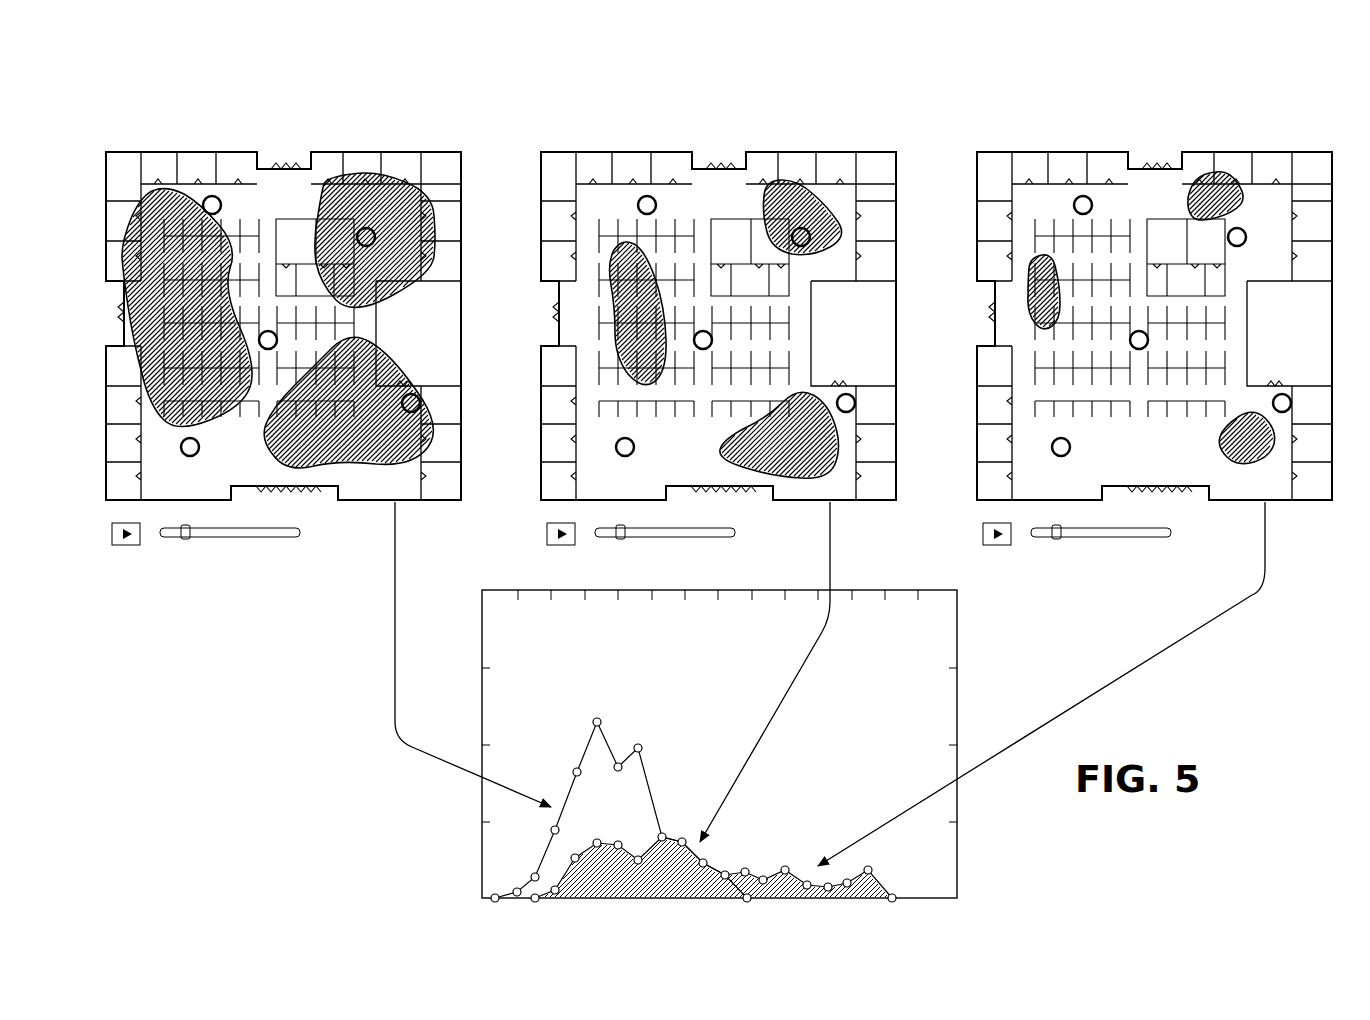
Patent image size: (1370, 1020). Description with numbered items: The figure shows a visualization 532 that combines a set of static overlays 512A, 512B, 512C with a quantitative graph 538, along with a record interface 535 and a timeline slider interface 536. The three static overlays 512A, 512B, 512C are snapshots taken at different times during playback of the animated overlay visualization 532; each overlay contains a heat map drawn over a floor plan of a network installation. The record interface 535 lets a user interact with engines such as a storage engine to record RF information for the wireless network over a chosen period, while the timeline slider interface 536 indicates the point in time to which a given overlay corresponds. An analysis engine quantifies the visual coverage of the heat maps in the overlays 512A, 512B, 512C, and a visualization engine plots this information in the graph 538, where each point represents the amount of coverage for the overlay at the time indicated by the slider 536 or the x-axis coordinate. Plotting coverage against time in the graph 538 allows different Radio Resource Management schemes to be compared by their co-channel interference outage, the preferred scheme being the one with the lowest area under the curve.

The visualization 532 is at (937, 86).
The static overlay 512A is at (372, 152).
The static overlay 512B is at (807, 152).
The static overlay 512C is at (1243, 152).
The record interface 535 is at (125, 546).
The timeline slider interface 536 is at (300, 536).
The graph 538 is at (852, 898).